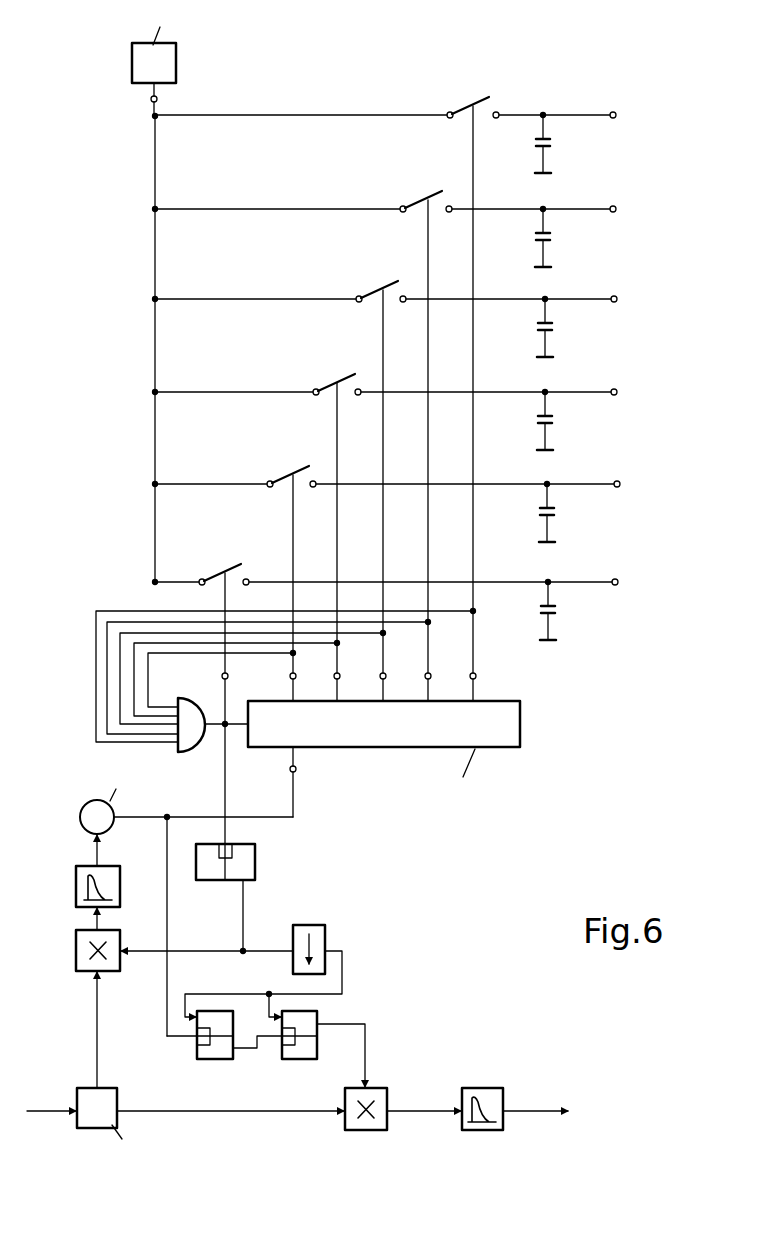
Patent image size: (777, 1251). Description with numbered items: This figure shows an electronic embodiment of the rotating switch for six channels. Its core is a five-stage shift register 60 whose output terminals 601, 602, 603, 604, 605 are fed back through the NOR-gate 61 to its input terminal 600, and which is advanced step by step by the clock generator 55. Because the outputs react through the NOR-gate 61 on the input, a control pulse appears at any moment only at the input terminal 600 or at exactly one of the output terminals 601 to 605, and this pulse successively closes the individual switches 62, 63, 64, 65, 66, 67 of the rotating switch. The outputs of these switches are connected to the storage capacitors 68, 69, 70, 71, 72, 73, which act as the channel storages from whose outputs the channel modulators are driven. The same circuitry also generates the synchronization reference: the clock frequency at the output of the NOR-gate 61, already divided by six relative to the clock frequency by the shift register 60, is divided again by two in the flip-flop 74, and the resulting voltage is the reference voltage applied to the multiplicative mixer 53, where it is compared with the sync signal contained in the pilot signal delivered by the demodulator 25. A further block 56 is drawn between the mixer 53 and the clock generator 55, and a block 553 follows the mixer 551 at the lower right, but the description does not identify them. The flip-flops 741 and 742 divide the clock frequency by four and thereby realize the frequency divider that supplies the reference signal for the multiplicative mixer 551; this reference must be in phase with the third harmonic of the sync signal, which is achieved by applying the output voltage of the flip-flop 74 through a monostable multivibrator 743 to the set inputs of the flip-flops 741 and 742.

The demodulator 25 is at (170, 62).
The multiplicative mixer 53 is at (112, 938).
The clock generator 55 is at (144, 802).
The filter 56 is at (120, 884).
The shift register 60 is at (520, 725).
The NOR-gate 61 is at (185, 745).
The switch 62 is at (473, 389).
The switch 63 is at (426, 436).
The switch 64 is at (381, 481).
The switch 65 is at (337, 527).
The switch 66 is at (291, 573).
The switch 67 is at (224, 694).
The storage capacitor 68 is at (556, 144).
The storage capacitor 69 is at (556, 238).
The storage capacitor 70 is at (558, 328).
The storage capacitor 71 is at (558, 421).
The storage capacitor 72 is at (560, 513).
The storage capacitor 73 is at (561, 611).
The flip-flop 74 is at (255, 861).
The input terminal 600 is at (223, 676).
The output terminal 601 is at (277, 676).
The output terminal 602 is at (321, 676).
The output terminal 603 is at (367, 676).
The output terminal 604 is at (412, 676).
The output terminal 605 is at (457, 676).
The flip-flop 741 is at (221, 1059).
The flip-flop 742 is at (300, 1059).
The monostable multivibrator 743 is at (325, 935).
The multiplicative mixer 551 is at (378, 1096).
The filter 553 is at (485, 1096).